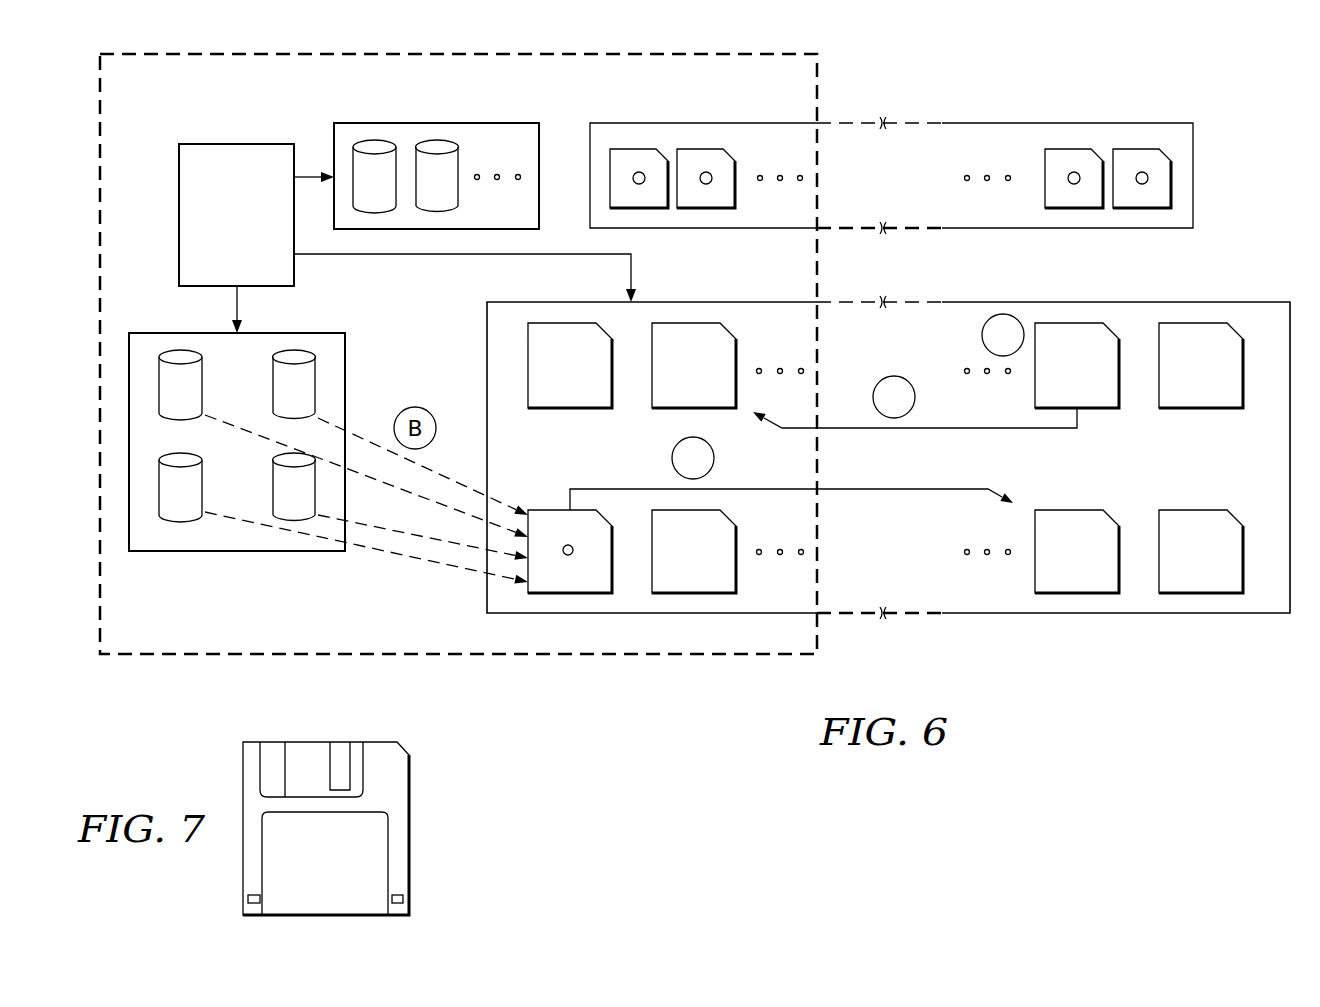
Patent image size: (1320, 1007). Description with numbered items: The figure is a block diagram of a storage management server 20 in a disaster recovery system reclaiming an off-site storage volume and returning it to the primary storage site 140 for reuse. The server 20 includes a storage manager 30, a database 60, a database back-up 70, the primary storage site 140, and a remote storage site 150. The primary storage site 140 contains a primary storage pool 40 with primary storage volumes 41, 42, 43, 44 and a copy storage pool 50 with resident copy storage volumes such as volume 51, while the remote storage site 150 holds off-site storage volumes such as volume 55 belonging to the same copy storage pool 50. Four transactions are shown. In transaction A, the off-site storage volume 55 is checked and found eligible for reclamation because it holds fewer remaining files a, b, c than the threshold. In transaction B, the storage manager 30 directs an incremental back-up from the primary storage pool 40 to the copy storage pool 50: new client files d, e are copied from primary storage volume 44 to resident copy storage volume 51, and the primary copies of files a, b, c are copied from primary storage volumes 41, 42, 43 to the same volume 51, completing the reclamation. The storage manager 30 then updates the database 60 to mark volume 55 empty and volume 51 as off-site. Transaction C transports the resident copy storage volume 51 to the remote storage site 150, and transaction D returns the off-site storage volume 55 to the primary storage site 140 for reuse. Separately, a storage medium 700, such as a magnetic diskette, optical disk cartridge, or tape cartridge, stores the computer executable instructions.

In FIG. 6, the storage management server 20 is at (150, 116).
In FIG. 6, the storage manager 30 is at (237, 144).
In FIG. 6, the primary storage pool 40 is at (237, 470).
In FIG. 6, the primary storage volume 41 is at (203, 366).
In FIG. 6, the primary storage volume 42 is at (273, 383).
In FIG. 6, the primary storage volume 43 is at (203, 470).
In FIG. 6, the primary storage volume 44 is at (273, 487).
In FIG. 6, the copy storage pool 50 is at (487, 351).
In FIG. 6, the resident copy storage volume 51 is at (556, 510).
In FIG. 6, the off-site storage volume 55 is at (1100, 408).
In FIG. 6, the database 60 is at (437, 123).
In FIG. 6, the database back-up 70 is at (682, 123).
In FIG. 6, the primary storage site 140 is at (625, 677).
In FIG. 6, the remote storage site 150 is at (1142, 677).
In FIG. 7, the storage medium 700 is at (448, 817).